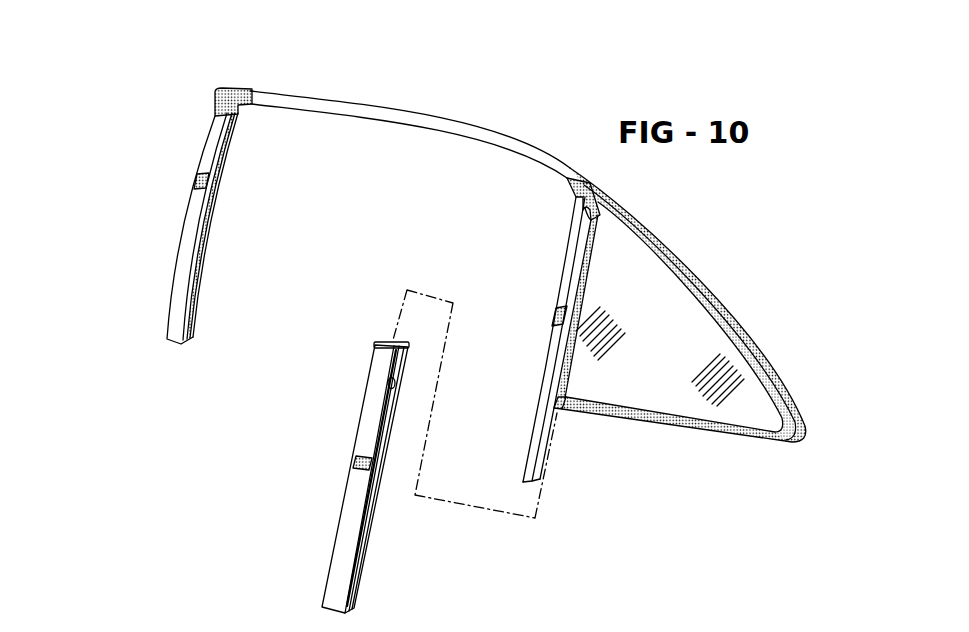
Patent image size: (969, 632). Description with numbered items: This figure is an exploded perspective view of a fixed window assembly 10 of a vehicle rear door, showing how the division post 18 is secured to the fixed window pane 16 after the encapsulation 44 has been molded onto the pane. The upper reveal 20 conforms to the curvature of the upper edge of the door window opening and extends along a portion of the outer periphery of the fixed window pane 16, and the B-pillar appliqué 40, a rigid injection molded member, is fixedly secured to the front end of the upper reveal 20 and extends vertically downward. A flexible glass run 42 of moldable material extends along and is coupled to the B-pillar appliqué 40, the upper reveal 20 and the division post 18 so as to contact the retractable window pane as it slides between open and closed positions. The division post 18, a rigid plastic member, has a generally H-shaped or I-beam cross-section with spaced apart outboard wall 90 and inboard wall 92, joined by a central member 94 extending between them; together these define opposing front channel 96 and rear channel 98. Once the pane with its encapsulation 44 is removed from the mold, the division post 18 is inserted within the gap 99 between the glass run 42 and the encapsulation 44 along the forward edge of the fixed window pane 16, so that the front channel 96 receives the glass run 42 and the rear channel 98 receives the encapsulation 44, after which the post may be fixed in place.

The vehicle window assembly 10 is at (530, 272).
The fixed window pane 16 is at (680, 355).
The division post 18 is at (343, 497).
The upper reveal 20 is at (477, 128).
The B-pillar appliqué 40 is at (180, 240).
The glass run 42 is at (214, 208).
The encapsulation 44 is at (697, 424).
The outboard wall 90 is at (409, 430).
The inboard wall 92 is at (406, 354).
The central member 94 is at (415, 292).
The front channel 96 is at (380, 346).
The rear channel 98 is at (388, 388).
The gap 99 is at (558, 410).